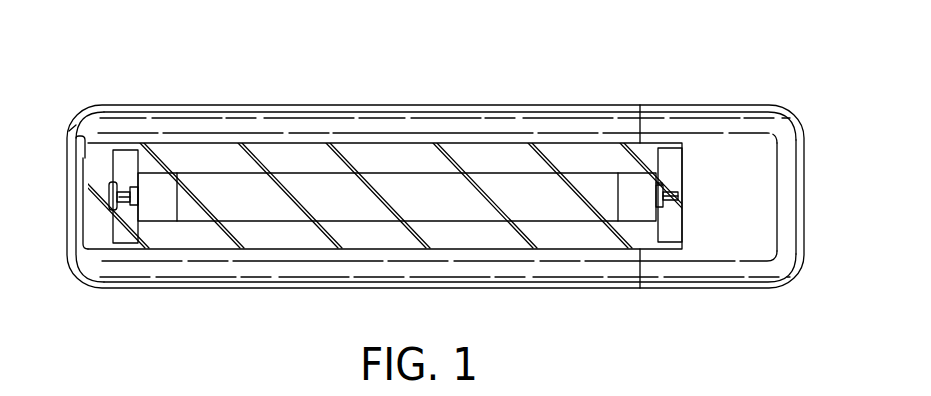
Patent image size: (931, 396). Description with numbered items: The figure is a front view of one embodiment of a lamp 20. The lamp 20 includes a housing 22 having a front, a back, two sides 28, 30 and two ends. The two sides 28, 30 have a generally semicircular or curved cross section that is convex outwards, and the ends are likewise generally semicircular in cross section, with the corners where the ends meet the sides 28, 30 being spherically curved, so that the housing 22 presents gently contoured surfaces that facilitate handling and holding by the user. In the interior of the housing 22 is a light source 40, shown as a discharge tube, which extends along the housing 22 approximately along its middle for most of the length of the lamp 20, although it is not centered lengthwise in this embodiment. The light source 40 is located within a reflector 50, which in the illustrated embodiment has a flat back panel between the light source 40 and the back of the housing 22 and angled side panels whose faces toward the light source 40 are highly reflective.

The lamp 20 is at (620, 310).
The housing 22 is at (705, 198).
The side 28 is at (433, 106).
The side 30 is at (232, 288).
The light source 40 is at (228, 194).
The reflector 50 is at (577, 153).